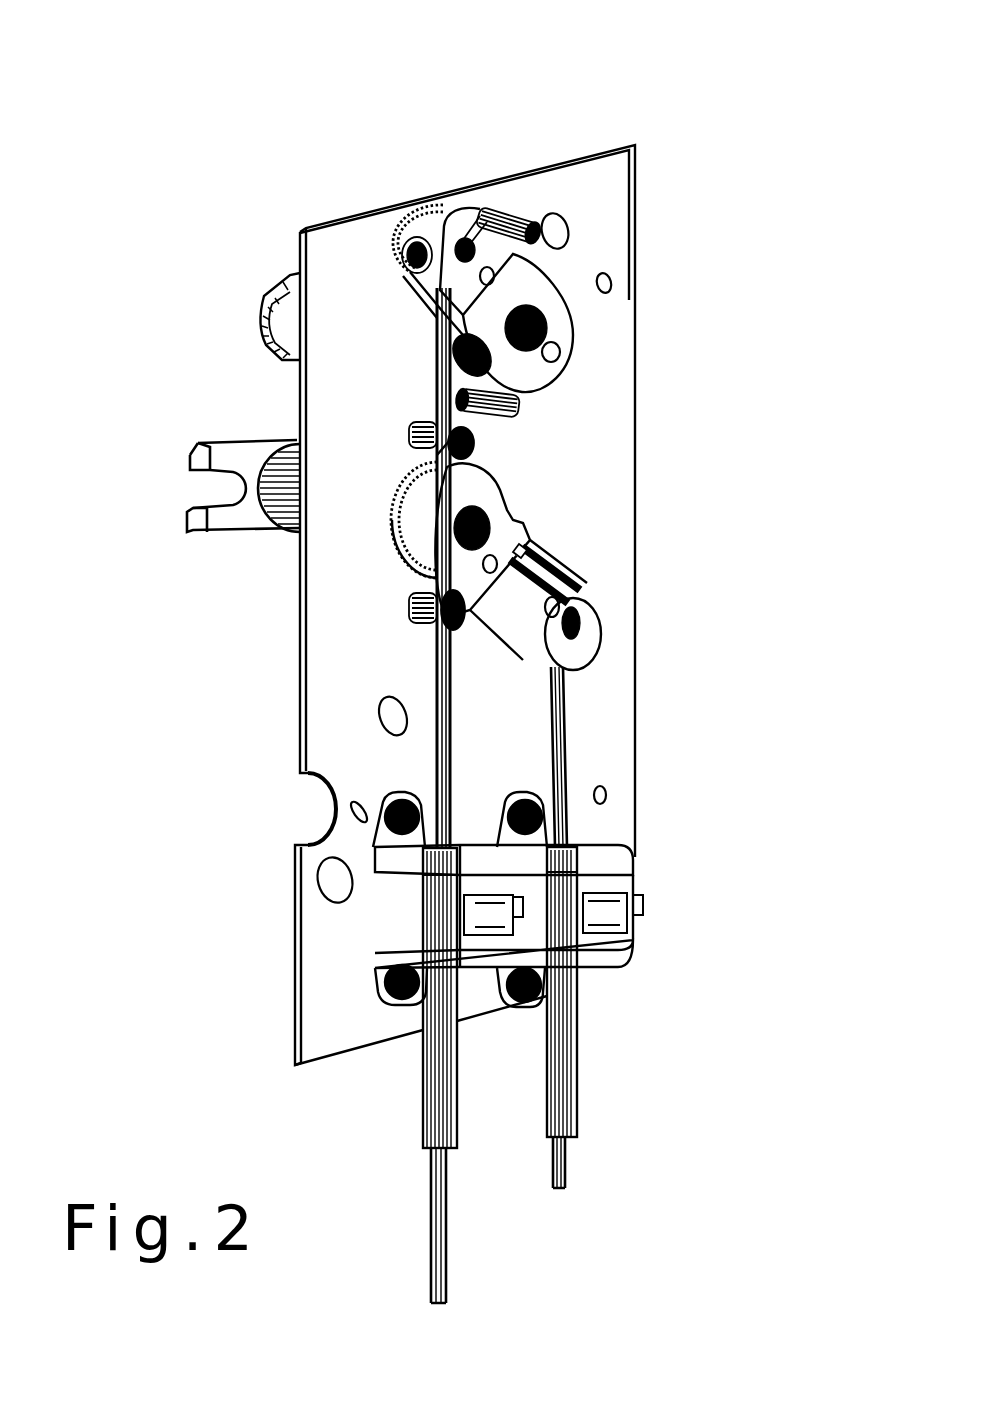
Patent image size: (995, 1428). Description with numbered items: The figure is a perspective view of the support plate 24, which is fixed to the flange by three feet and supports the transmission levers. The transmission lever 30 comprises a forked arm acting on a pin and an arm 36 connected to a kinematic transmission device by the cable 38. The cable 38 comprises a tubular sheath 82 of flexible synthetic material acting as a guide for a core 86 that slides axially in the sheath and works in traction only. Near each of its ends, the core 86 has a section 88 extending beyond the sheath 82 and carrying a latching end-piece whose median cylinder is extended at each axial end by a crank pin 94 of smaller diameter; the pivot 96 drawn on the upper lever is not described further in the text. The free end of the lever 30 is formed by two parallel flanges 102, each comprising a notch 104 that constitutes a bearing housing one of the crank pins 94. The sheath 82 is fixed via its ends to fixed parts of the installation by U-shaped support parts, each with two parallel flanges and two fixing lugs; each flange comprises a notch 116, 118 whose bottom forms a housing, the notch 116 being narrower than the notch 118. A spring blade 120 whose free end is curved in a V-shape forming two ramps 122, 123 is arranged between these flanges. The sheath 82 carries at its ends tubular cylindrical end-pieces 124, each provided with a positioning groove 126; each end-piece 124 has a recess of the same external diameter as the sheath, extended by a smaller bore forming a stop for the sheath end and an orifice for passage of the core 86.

The support plate 24 is at (620, 364).
The transmission lever 30 is at (624, 588).
The arm 36 is at (423, 563).
The cable 38 is at (592, 1213).
The tubular sheath 82 is at (575, 1097).
The core 86 is at (548, 710).
The section 88 is at (605, 752).
The crank pin 94 is at (580, 632).
The pivot pin 96 is at (470, 245).
The parallel flanges 102 is at (583, 663).
The notch 104 is at (597, 590).
The notch 116 is at (593, 950).
The notch 118 is at (600, 967).
The spring blade 120 is at (640, 913).
The ramp 122 is at (630, 957).
The ramp 123 is at (613, 883).
The tubular cylindrical end-piece 124 is at (557, 920).
The positioning groove 126 is at (588, 853).